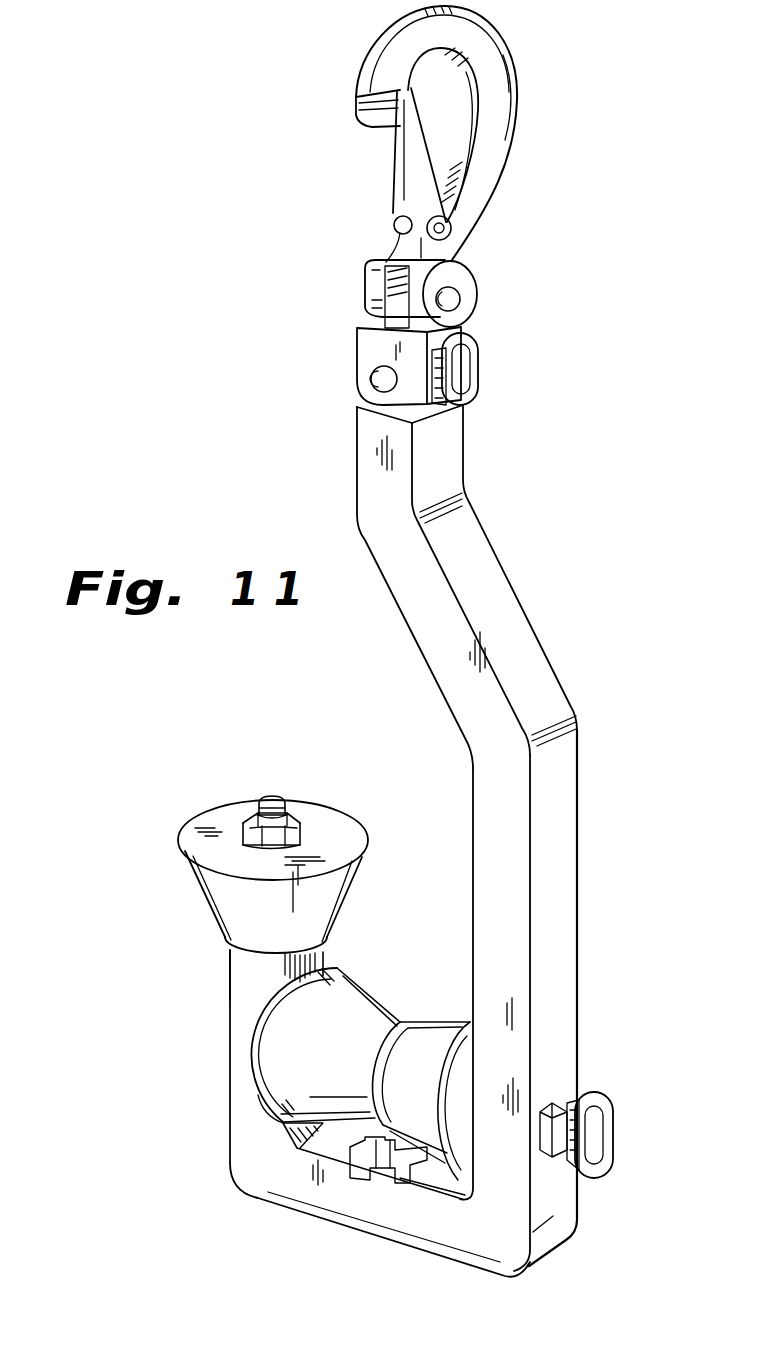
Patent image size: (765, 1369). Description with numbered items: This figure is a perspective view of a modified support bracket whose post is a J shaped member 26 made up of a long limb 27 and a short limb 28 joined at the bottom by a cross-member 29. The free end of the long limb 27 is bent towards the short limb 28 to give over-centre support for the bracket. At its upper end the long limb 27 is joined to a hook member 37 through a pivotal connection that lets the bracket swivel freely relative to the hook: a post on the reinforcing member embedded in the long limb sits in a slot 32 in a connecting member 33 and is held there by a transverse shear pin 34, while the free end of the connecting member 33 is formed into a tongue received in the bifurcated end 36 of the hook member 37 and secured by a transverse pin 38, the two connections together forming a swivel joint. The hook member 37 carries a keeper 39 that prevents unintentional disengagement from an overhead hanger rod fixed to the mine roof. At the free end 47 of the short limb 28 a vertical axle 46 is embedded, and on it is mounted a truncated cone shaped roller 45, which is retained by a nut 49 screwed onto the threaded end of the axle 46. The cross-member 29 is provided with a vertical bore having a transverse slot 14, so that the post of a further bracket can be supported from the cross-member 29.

The transverse slot 14 is at (350, 1193).
The J shaped member 26 is at (547, 571).
The long limb 27 is at (567, 930).
The short limb 28 is at (230, 1077).
The cross-member 29 is at (418, 1248).
The slot 32 is at (443, 402).
The connecting member 33 is at (362, 334).
The transverse shear pin 34 is at (384, 381).
The bifurcated end 36 is at (468, 266).
The hook member 37 is at (497, 97).
The transverse pin 38 is at (456, 298).
The keeper 39 is at (405, 161).
The truncated cone shaped roller 45 is at (352, 893).
The vertical axle 46 is at (270, 797).
The free end 47 is at (228, 988).
The nut 49 is at (242, 828).